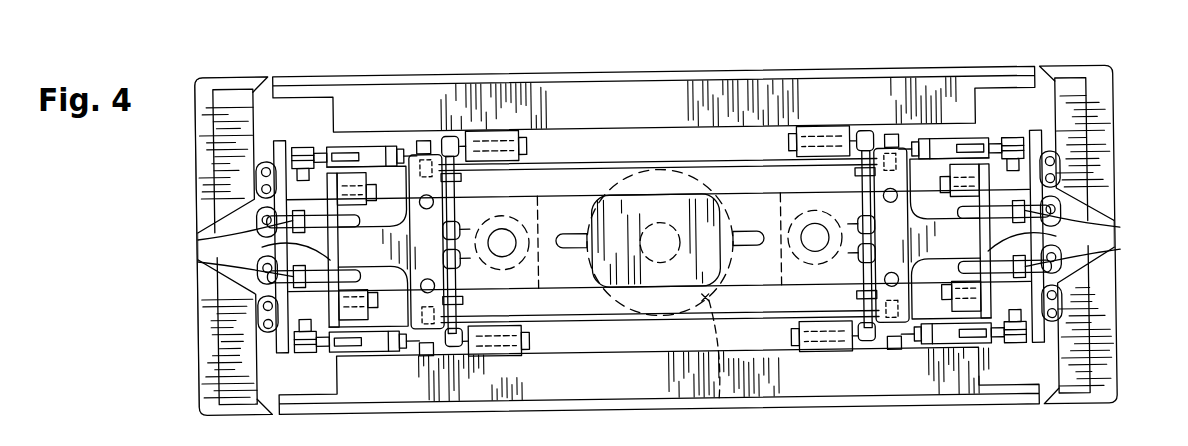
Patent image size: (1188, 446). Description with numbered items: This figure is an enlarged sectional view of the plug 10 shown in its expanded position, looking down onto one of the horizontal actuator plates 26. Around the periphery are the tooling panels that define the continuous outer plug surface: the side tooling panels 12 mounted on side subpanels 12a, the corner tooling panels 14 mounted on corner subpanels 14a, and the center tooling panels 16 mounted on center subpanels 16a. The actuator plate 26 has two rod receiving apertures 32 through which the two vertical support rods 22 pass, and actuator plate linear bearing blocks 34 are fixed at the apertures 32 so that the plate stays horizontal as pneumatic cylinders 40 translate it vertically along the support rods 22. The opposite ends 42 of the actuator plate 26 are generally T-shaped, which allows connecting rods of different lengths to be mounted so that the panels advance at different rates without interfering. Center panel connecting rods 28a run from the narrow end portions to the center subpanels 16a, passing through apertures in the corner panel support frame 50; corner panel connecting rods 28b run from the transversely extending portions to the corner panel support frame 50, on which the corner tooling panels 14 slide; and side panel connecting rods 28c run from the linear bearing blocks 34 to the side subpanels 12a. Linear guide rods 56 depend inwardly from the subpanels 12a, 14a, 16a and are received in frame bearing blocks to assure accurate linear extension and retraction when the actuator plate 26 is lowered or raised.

The plug 10 is at (1126, 102).
The side tooling panel 12 is at (675, 79).
The side subpanel 12a is at (792, 108).
The corner tooling panel 14 is at (205, 163).
The corner subpanel 14a is at (232, 100).
The center tooling panel 16 is at (200, 240).
The center subpanel 16a is at (256, 267).
The vertical support rod 22 is at (538, 305).
The actuator plate 26 is at (584, 202).
The center panel connecting rod 28a is at (260, 252).
The corner panel connecting rod 28b is at (363, 150).
The side panel connecting rod 28c is at (481, 147).
The rod receiving aperture 32 is at (517, 243).
The actuator plate linear bearing block 34 is at (507, 228).
The pneumatic cylinder 40 is at (719, 419).
The opposite end of actuator plate 42 is at (260, 307).
The corner panel support frame 50 is at (262, 352).
The linear guide rod 56 is at (382, 189).